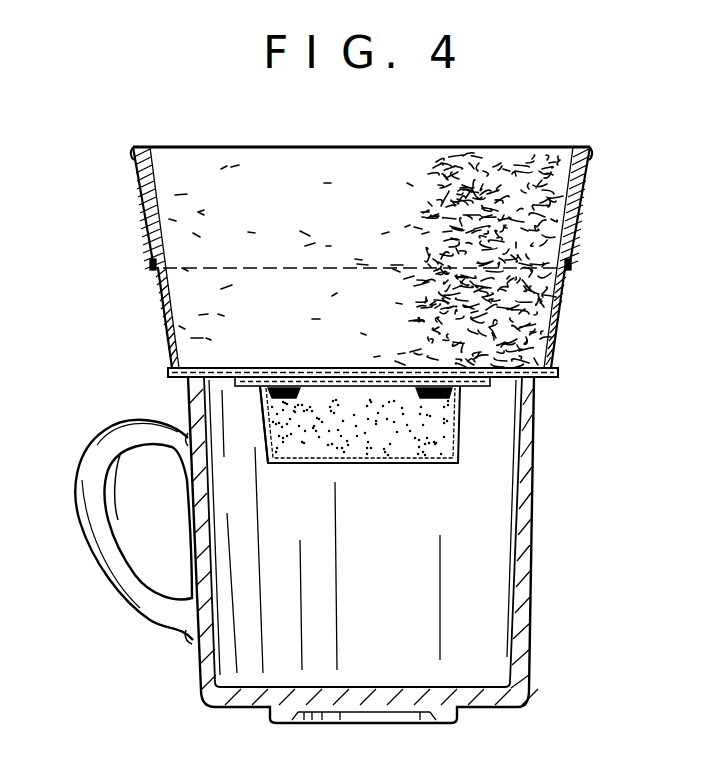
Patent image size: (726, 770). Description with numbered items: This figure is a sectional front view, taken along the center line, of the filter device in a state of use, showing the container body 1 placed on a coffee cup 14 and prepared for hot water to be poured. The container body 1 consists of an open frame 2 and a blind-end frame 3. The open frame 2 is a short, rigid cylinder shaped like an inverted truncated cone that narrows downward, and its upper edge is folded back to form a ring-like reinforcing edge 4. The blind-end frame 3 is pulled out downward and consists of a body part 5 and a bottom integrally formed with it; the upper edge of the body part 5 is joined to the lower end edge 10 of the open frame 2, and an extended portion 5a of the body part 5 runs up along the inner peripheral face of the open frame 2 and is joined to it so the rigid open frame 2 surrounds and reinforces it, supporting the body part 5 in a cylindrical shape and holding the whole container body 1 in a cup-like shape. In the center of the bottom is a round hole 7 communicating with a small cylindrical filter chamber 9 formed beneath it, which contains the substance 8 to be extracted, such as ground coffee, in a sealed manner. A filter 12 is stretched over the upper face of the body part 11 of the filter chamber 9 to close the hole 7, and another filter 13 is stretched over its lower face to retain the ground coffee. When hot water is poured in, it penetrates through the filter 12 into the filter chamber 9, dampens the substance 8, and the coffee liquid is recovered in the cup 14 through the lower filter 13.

The container body 1 is at (344, 228).
The open frame 2 is at (580, 195).
The blind-end frame 3 is at (560, 325).
The reinforcing edge 4 is at (587, 150).
The body part 5 is at (163, 303).
The extended portion 5a is at (213, 165).
The round hole 7 is at (353, 372).
The substance to be extracted 8 is at (355, 440).
The filter chamber 9 is at (406, 456).
The lower end edge 10 is at (567, 268).
The body part of the filter chamber 11 is at (262, 423).
The filter 12 is at (303, 378).
The filter 13 is at (296, 465).
The coffee cup 14 is at (530, 600).